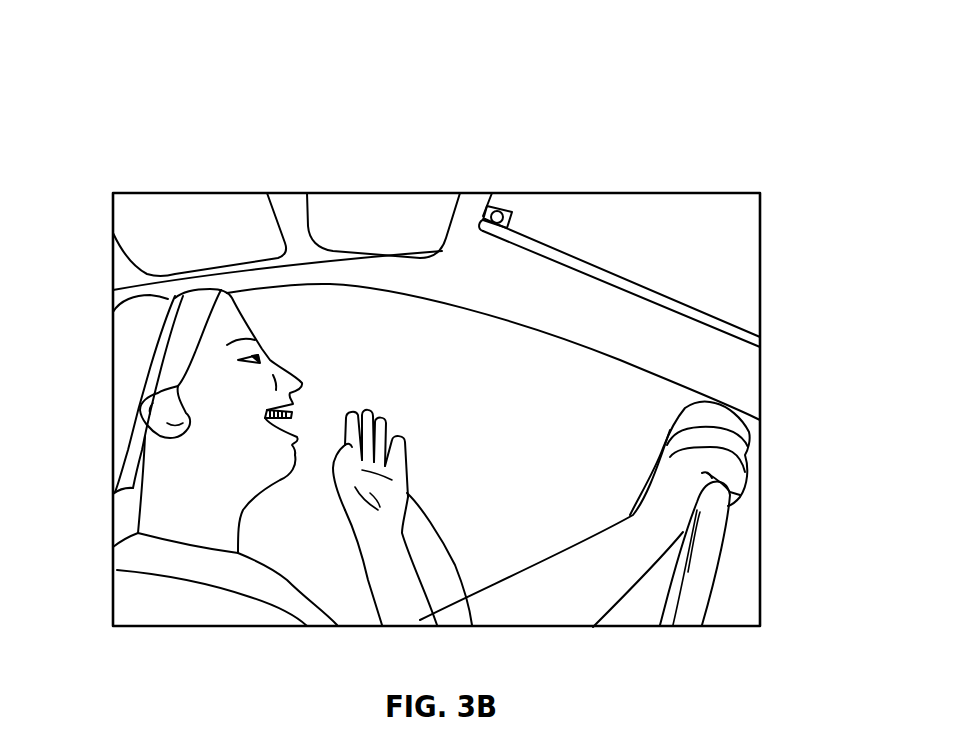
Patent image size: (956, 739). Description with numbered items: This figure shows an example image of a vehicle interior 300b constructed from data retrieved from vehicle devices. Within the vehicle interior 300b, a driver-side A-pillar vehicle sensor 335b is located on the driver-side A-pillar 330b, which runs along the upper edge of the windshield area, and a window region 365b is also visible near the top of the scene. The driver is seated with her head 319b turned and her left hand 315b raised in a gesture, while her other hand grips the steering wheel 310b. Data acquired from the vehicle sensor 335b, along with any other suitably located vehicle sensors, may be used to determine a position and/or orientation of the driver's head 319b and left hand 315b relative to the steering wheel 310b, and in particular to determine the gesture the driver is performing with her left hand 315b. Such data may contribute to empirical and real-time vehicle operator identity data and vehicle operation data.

The vehicle interior 300b is at (139, 137).
The steering wheel 310b is at (705, 568).
The driver's left hand 315b is at (472, 625).
The driver's head 319b is at (210, 290).
The driver-side A-pillar 330b is at (612, 325).
The driver-side A-pillar vehicle sensor 335b is at (513, 219).
The windshield window area 365b is at (410, 213).